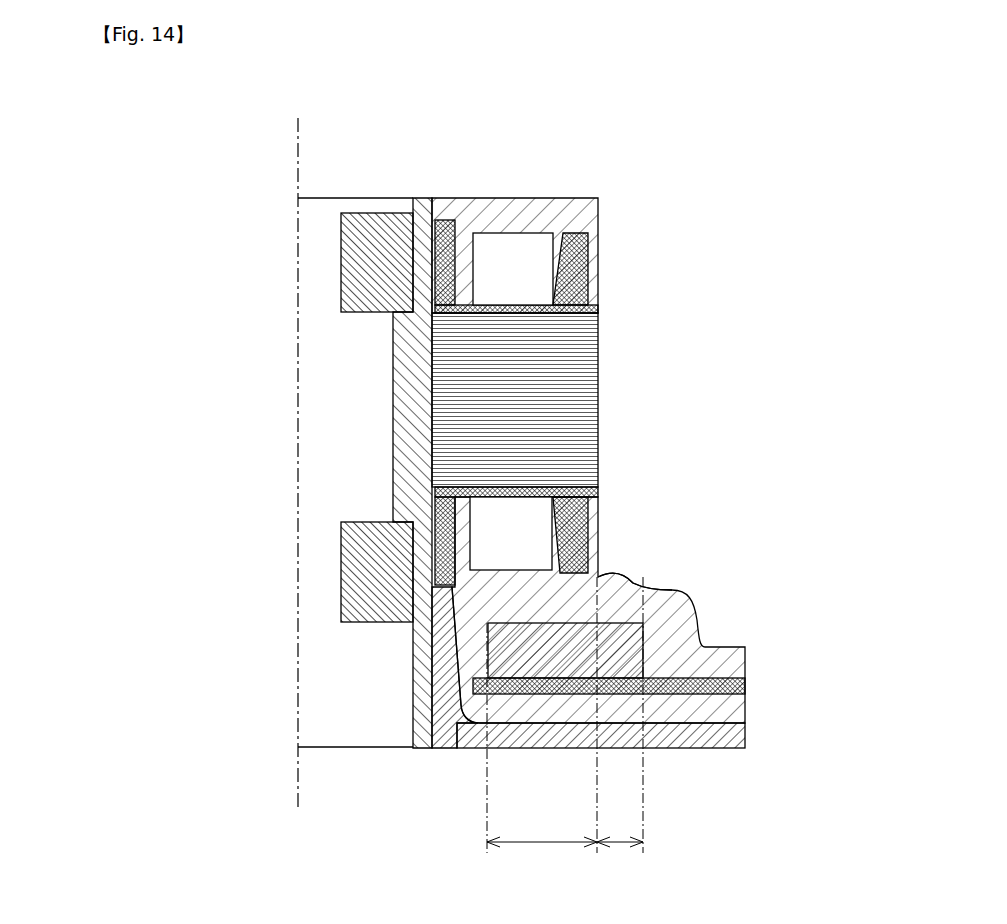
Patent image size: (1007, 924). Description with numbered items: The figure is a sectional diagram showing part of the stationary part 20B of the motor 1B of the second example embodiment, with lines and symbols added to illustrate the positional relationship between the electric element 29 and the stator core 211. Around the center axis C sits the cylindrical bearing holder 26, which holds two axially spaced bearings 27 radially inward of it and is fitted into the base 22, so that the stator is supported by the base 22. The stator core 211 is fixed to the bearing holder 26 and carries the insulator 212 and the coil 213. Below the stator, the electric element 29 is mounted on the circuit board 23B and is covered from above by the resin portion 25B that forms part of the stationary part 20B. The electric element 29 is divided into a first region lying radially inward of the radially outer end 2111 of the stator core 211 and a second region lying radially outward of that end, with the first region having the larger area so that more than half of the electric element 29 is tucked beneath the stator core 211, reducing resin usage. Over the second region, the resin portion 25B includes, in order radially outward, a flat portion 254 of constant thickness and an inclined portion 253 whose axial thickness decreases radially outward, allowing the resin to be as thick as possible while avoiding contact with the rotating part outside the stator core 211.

The center axis C is at (296, 163).
The stationary part 20B is at (543, 501).
The motor 1B is at (630, 195).
The bearing 27 is at (360, 232).
The radially outer end 2111 is at (598, 345).
The stator core 211 is at (557, 403).
The coil 213 is at (537, 530).
The insulator 212 is at (393, 477).
The flat portion 254 is at (602, 577).
The inclined portion 253 is at (630, 588).
The electric element 29 is at (657, 650).
The circuit board 23B is at (745, 681).
The resin portion 25B is at (723, 750).
The bearing holder 26 is at (412, 723).
The base 22 is at (452, 752).